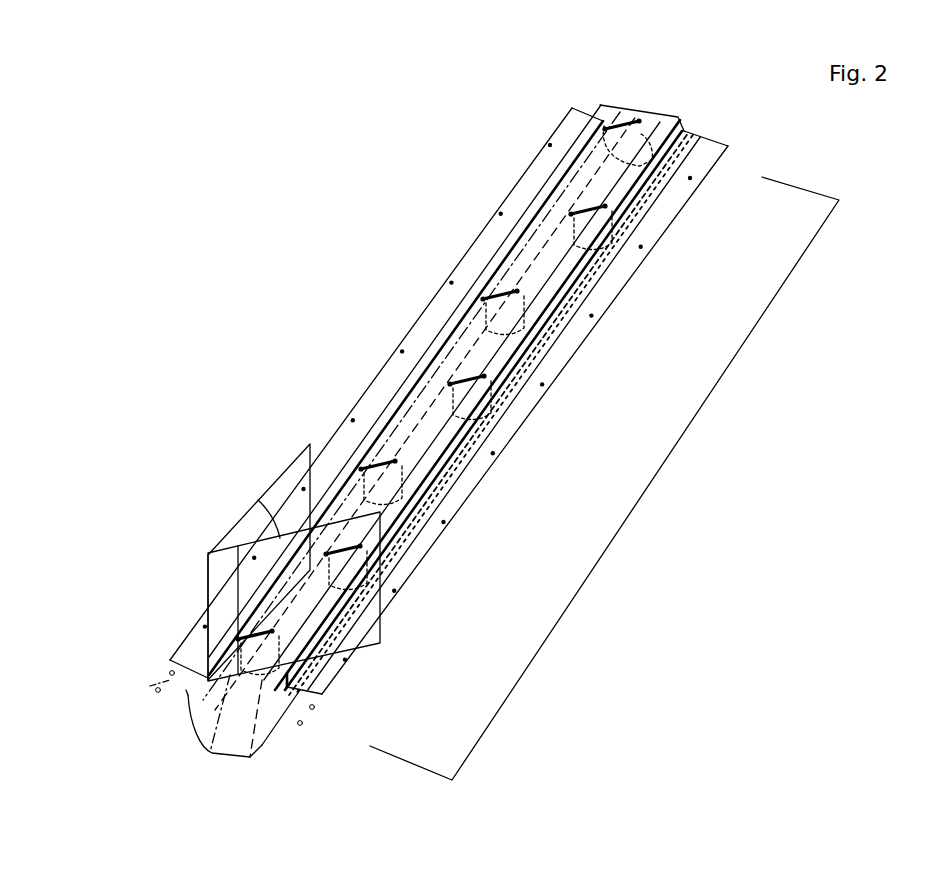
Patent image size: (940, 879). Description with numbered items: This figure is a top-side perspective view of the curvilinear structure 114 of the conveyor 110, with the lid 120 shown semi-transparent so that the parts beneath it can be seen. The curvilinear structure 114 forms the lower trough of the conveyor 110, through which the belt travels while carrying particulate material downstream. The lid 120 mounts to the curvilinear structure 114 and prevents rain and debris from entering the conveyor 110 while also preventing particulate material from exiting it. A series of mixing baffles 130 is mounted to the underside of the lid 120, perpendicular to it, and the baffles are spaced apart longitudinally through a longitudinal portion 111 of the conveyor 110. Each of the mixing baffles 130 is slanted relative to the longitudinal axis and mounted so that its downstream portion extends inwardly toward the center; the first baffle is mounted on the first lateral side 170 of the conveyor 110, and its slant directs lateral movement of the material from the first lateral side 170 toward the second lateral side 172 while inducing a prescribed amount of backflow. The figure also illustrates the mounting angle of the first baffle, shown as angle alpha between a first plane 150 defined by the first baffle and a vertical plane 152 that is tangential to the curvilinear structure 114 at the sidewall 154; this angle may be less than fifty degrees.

The conveyor 110 is at (345, 370).
The longitudinal portion 111 is at (678, 450).
The curvilinear structure 114 is at (235, 752).
The lid 120 is at (442, 330).
The mixing baffles 130 is at (440, 468).
The first plane 150 is at (383, 624).
The vertical plane 152 is at (298, 460).
The sidewall 154 is at (188, 702).
The first lateral side 170 is at (190, 724).
The second lateral side 172 is at (259, 748).